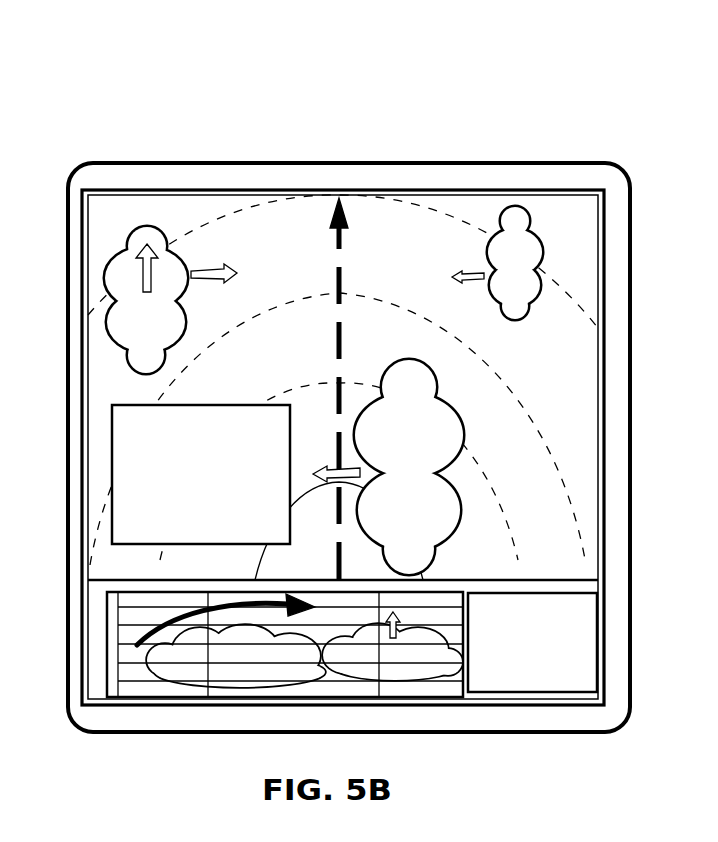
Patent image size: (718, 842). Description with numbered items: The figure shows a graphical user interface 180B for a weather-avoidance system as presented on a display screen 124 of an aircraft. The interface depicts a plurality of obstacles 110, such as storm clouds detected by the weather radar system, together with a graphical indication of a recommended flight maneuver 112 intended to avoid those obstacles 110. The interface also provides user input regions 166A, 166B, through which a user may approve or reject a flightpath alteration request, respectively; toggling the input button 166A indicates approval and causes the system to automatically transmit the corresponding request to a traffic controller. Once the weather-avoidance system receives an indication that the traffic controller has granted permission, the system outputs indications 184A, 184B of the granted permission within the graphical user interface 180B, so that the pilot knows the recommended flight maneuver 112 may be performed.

The display screen 124 is at (406, 87).
The graphical user interface 180B is at (169, 122).
The obstacles 110 is at (96, 251).
The indication of granted permission 184A is at (238, 423).
The indication of granted permission 184B is at (550, 603).
The recommended flight maneuver 112 is at (132, 640).
The user input region 166A is at (231, 653).
The user input region 166B is at (231, 669).